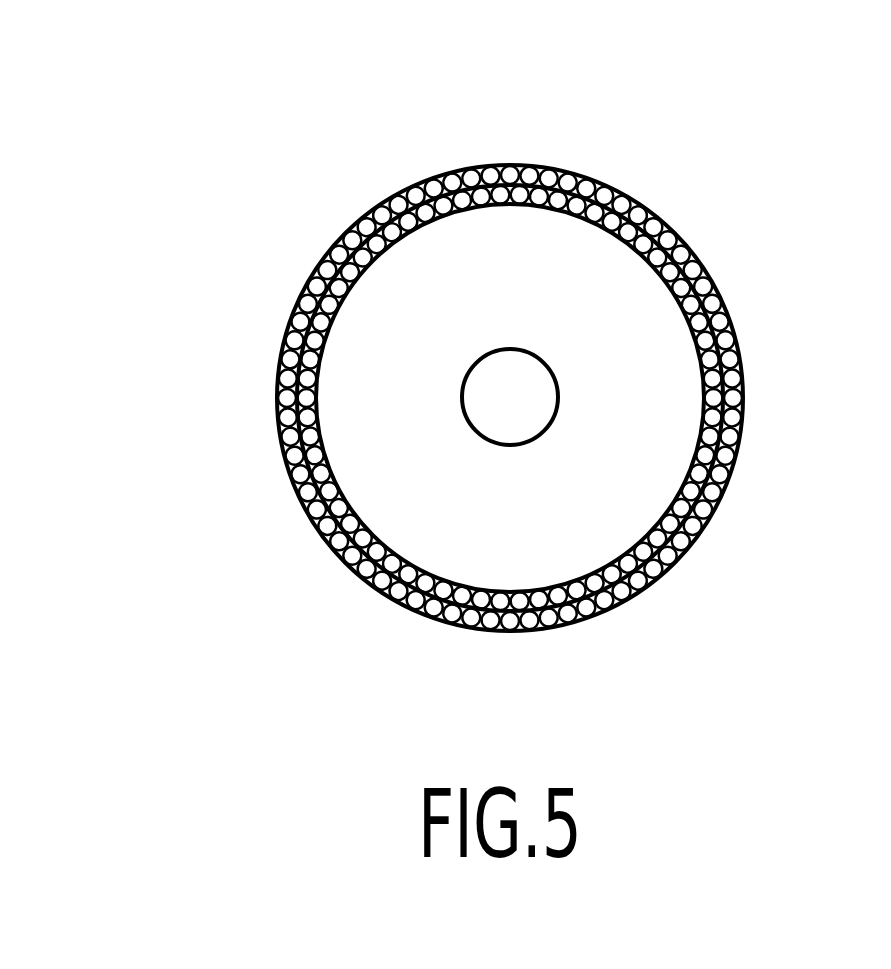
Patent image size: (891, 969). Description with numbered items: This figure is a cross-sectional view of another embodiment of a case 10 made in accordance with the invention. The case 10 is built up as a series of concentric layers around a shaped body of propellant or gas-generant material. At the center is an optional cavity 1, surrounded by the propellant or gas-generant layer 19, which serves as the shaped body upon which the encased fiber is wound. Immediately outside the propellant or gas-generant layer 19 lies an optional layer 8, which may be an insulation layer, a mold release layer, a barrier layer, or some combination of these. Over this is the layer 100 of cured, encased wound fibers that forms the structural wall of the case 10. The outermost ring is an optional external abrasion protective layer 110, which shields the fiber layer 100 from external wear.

The case 10 is at (272, 206).
The layer of cured, encased wound fibers 100 is at (518, 170).
The external abrasion protective layer 110 is at (645, 207).
The optional layer 8 is at (700, 332).
The propellant or gas-generant layer 19 is at (610, 503).
The cavity 1 is at (512, 447).